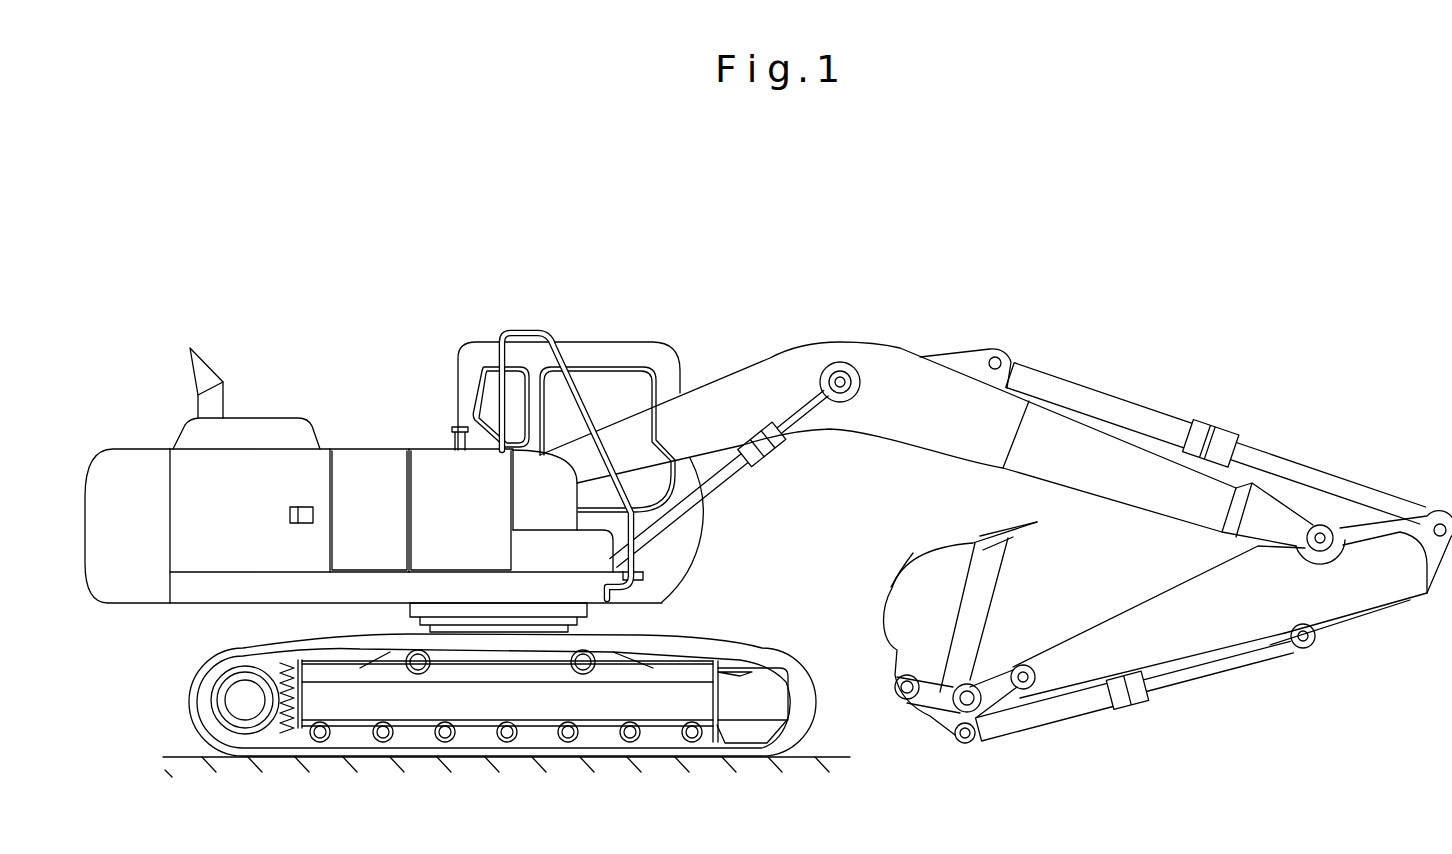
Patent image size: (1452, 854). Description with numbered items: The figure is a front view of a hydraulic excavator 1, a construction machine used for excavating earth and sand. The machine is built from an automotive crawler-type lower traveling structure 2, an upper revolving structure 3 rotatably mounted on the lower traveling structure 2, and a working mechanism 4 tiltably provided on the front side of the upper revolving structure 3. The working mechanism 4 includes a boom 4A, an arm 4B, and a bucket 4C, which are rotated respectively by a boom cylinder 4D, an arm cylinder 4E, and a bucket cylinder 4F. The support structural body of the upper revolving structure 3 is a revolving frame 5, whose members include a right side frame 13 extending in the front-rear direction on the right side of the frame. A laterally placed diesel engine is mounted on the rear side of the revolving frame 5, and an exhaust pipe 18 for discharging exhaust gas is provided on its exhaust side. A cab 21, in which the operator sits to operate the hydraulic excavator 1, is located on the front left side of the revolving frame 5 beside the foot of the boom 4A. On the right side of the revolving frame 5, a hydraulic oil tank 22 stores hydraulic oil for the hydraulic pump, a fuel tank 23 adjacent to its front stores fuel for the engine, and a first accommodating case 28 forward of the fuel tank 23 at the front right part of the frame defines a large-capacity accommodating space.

The hydraulic excavator 1 is at (655, 220).
The lower traveling structure 2 is at (485, 693).
The upper revolving structure 3 is at (568, 326).
The working mechanism 4 is at (870, 341).
The boom 4A is at (797, 360).
The arm 4B is at (1210, 613).
The bucket 4C is at (927, 608).
The boom cylinder 4D is at (781, 455).
The arm cylinder 4E is at (1213, 435).
The bucket cylinder 4F is at (1133, 697).
The revolving frame 5 is at (673, 585).
The right side frame 13 is at (263, 592).
The exhaust pipe 18 is at (206, 380).
The cab 21 is at (598, 357).
The hydraulic oil tank 22 is at (360, 470).
The fuel tank 23 is at (422, 470).
The first accommodating case 28 is at (597, 547).